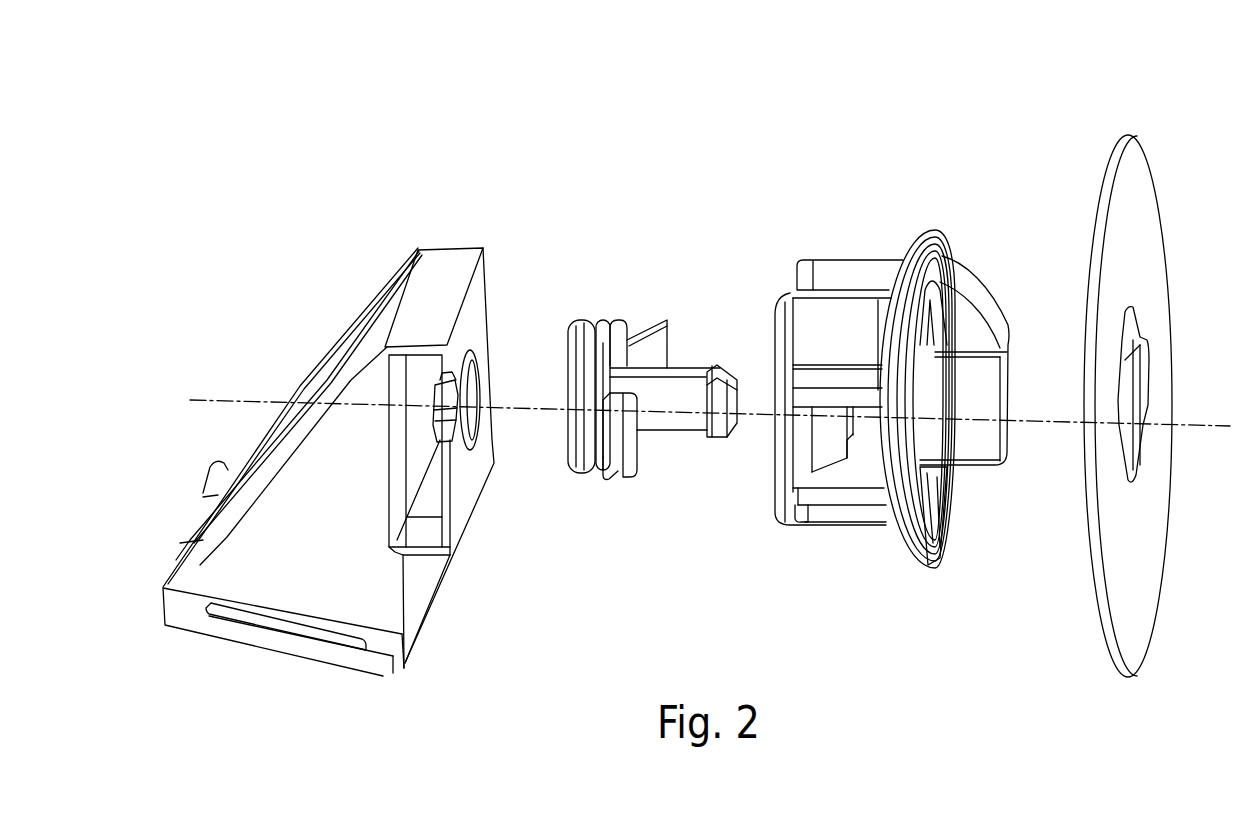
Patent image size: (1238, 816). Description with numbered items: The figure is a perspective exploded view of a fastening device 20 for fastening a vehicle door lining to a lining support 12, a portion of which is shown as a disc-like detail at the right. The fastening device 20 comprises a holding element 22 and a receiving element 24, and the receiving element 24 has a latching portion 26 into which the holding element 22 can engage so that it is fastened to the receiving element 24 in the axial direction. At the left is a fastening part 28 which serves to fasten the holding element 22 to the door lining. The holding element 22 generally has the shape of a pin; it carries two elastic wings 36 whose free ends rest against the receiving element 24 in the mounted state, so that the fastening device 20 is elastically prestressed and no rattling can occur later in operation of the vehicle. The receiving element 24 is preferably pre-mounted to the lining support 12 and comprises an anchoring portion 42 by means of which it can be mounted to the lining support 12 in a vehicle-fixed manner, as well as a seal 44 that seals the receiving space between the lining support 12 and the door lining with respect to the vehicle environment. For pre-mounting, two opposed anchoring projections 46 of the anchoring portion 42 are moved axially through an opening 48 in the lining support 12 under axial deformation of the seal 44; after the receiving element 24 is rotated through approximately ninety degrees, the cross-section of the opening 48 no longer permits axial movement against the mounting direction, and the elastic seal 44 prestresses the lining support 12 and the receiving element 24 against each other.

The lining support 12 is at (1150, 205).
The fastening device 20 is at (1043, 88).
The holding element 22 is at (621, 306).
The receiving element 24 is at (847, 249).
The latching portion 26 is at (761, 342).
The fastening part 28 is at (449, 238).
The elastic wings 36 is at (610, 465).
The anchoring portion 42 is at (967, 552).
The seal 44 is at (942, 260).
The anchoring projections 46 is at (957, 330).
The opening 48 is at (1147, 380).